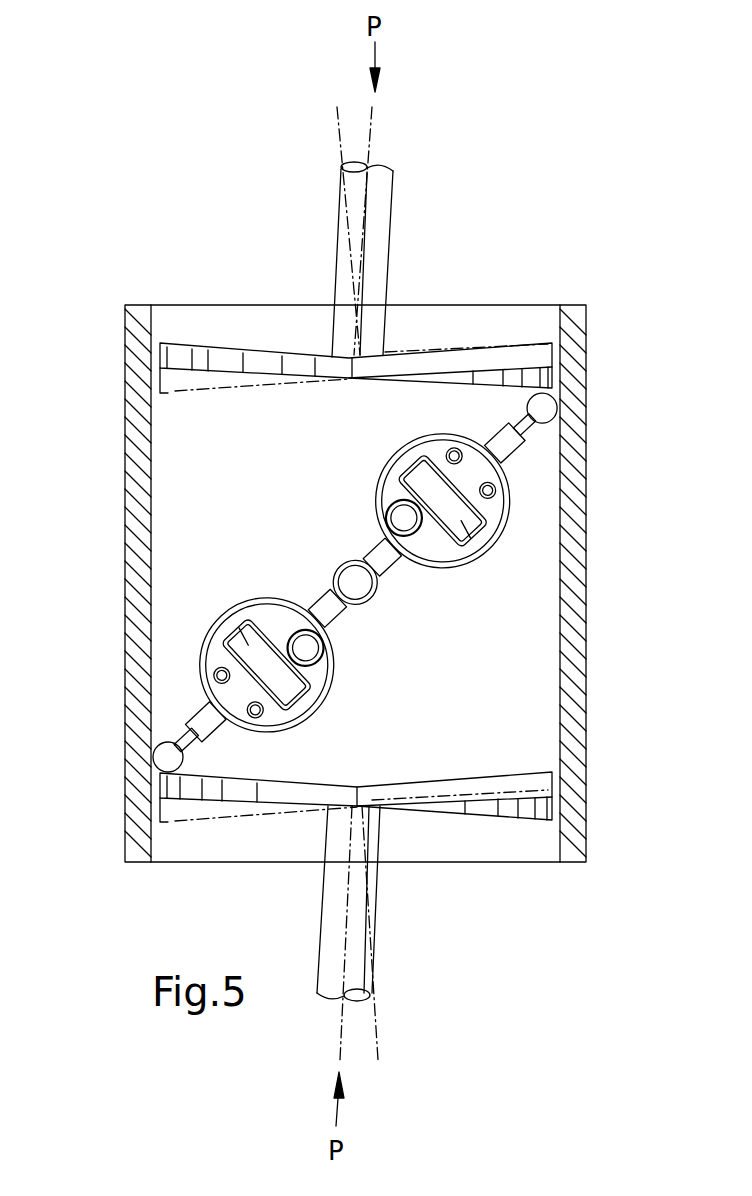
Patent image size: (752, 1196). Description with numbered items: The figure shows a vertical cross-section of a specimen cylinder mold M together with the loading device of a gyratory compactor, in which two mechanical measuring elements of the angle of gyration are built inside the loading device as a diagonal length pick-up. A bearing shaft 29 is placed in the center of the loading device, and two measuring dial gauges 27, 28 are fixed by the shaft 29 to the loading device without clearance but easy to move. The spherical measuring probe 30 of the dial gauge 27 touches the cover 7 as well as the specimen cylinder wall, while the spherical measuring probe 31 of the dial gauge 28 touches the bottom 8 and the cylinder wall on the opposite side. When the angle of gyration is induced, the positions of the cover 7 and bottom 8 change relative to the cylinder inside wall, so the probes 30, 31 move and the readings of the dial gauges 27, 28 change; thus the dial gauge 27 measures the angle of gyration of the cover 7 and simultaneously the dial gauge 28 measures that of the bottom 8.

The housing frame M is at (135, 398).
The cover 7 is at (407, 367).
The bottom 8 is at (485, 808).
The dial gauge 27 is at (495, 541).
The dial gauge 28 is at (212, 618).
The bearing shaft 29 is at (372, 597).
The spherical measuring probe 30 is at (552, 416).
The spherical measuring probe 31 is at (156, 752).